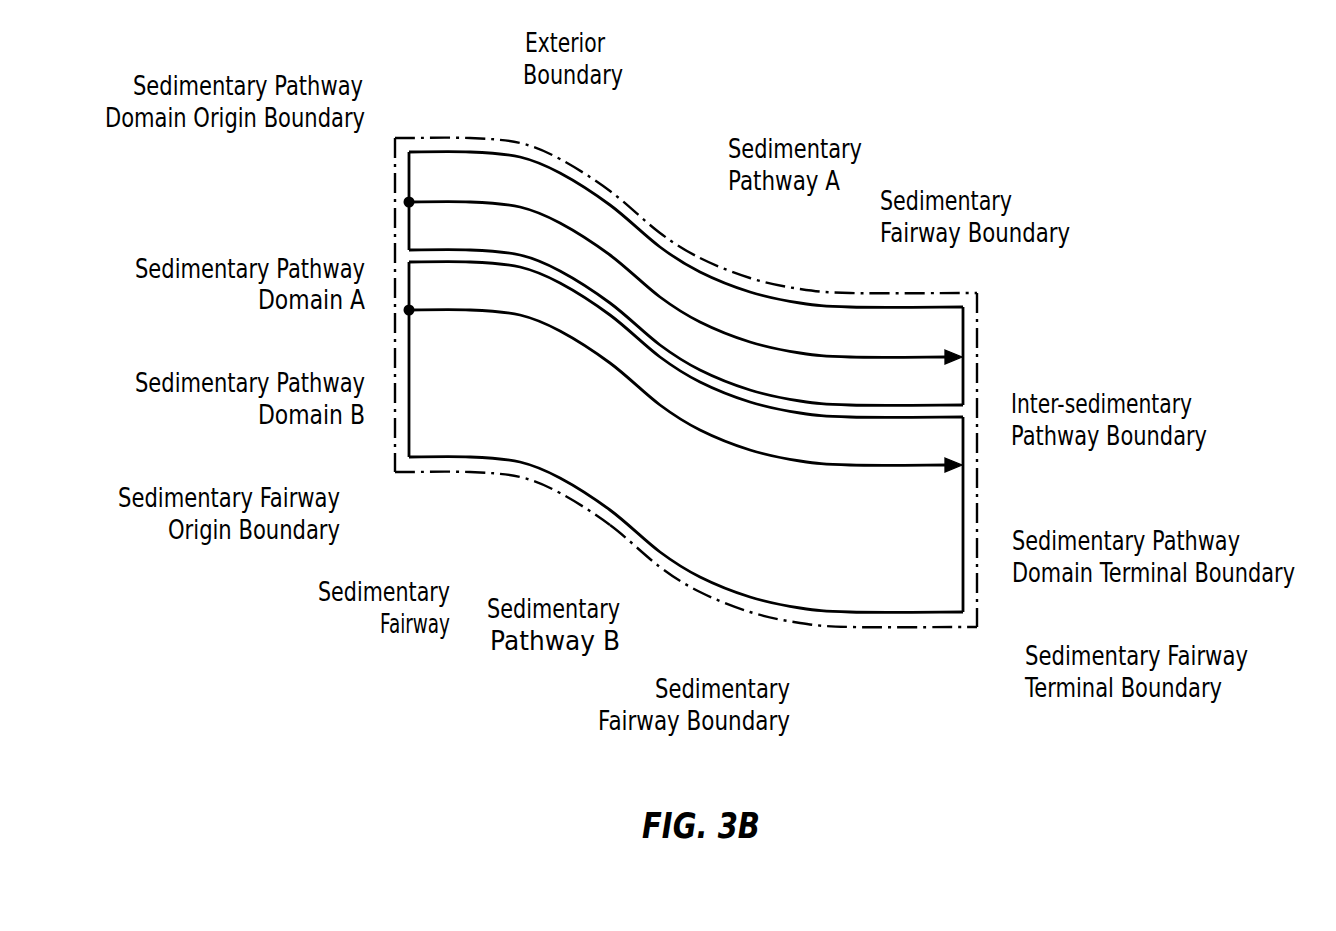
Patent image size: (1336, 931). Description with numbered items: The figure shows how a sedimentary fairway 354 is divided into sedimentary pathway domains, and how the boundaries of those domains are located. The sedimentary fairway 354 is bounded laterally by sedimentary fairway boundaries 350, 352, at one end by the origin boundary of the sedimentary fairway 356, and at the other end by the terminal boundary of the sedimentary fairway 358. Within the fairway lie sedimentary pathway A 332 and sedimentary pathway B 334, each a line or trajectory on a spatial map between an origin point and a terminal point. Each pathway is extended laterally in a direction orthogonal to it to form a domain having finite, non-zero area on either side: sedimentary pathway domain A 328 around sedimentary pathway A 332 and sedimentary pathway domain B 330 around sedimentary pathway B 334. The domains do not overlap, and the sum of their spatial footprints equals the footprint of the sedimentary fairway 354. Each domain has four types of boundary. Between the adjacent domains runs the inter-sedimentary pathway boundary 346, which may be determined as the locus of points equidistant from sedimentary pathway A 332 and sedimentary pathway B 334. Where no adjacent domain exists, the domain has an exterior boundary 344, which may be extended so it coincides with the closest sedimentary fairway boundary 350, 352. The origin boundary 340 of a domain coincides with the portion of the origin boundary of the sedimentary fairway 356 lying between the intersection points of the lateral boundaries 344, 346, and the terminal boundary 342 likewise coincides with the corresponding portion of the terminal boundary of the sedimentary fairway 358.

The sedimentary pathway domain A 328 is at (435, 221).
The sedimentary pathway domain B 330 is at (435, 362).
The sedimentary pathway A 332 is at (648, 278).
The sedimentary pathway B 334 is at (713, 440).
The origin boundary 340 is at (409, 175).
The terminal boundary 342 is at (963, 487).
The exterior boundary 344 is at (490, 137).
The inter-sedimentary pathway boundary 346 is at (918, 405).
The sedimentary fairway boundary 350 is at (820, 628).
The sedimentary fairway boundary 352 is at (843, 293).
The sedimentary fairway 354 is at (555, 484).
The origin boundary of the sedimentary fairway 356 is at (395, 446).
The terminal boundary of the sedimentary fairway 358 is at (978, 597).